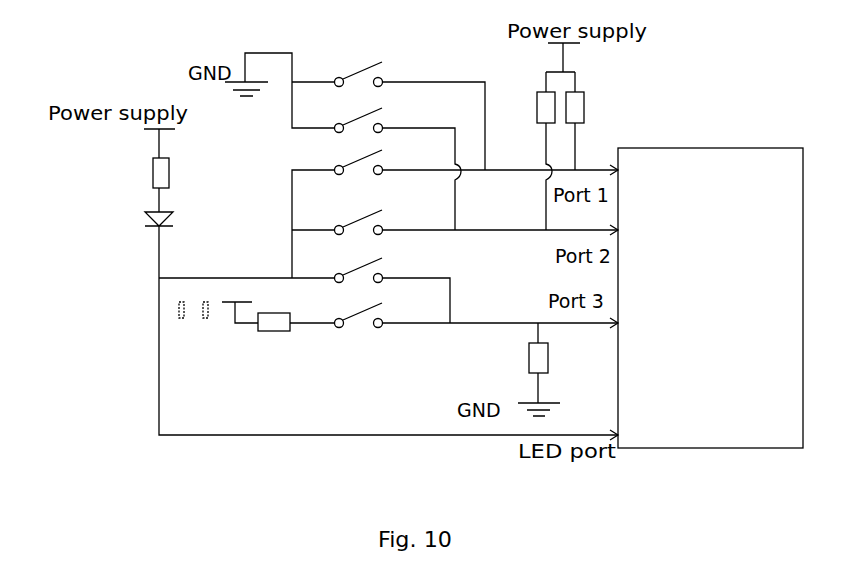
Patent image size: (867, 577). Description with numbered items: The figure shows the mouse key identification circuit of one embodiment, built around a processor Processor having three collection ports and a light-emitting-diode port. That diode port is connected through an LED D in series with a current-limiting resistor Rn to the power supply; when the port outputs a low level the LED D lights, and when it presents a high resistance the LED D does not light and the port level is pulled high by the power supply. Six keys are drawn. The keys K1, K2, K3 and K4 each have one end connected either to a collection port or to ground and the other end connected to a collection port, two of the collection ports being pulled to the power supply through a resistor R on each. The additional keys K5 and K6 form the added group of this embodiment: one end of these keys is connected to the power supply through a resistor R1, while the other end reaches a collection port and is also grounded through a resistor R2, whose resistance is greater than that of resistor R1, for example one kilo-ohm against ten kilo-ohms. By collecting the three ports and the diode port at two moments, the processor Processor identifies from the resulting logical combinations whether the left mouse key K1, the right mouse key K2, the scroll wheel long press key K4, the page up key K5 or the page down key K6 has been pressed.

The left mouse key K1 is at (388, 112).
The right mouse key K2 is at (398, 164).
The key K3 is at (455, 209).
The long press key of the scroll wheel K4 is at (455, 212).
The page up key of the scroll wheel K5 is at (304, 284).
The page down key of the scroll wheel K6 is at (454, 310).
The resistor R is at (558, 161).
The current-limiting resistor Rn is at (142, 173).
The LED D is at (144, 209).
The resistor R1 is at (234, 331).
The resistor R2 is at (524, 369).
The processor Processor is at (710, 298).